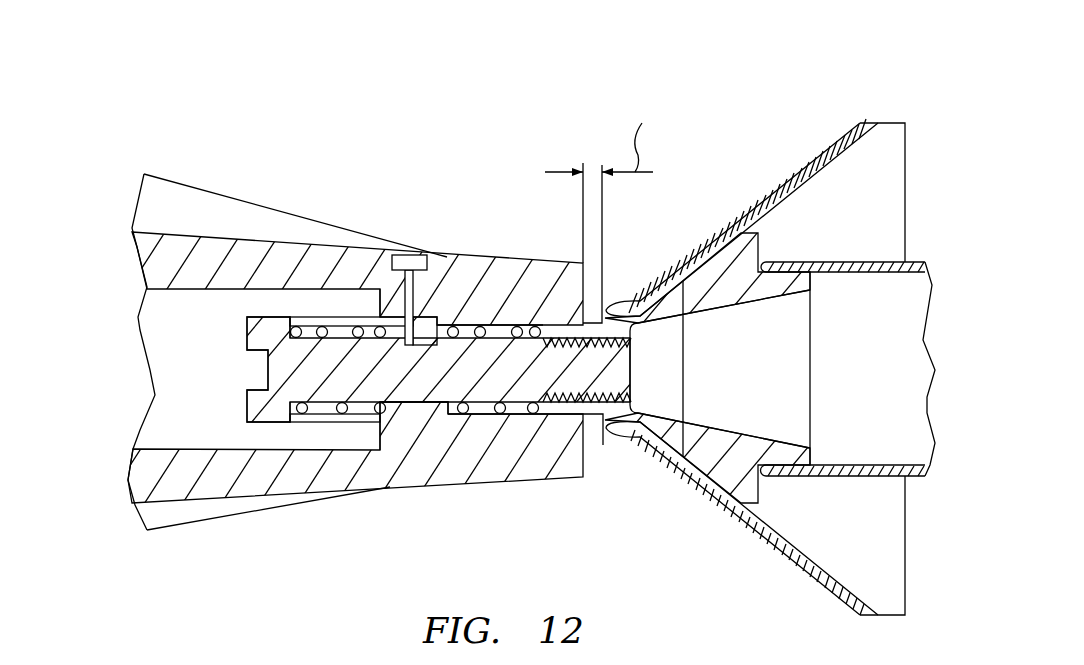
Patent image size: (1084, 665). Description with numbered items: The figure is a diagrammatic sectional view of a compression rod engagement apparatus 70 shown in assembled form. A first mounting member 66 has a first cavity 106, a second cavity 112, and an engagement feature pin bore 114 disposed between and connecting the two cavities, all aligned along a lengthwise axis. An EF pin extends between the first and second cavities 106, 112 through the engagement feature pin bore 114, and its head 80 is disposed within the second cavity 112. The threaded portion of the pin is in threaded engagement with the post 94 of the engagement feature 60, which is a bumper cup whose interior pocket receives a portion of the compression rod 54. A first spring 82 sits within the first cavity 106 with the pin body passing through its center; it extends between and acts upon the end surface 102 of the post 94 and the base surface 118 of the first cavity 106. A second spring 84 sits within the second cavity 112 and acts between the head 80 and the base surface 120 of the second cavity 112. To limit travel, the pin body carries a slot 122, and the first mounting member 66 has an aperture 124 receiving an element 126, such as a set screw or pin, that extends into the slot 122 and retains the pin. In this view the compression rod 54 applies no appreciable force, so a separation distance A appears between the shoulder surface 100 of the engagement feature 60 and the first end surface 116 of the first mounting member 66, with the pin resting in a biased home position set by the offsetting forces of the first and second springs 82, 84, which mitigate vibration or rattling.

The compression rod engagement apparatus 70 is at (793, 74).
The first mounting member 66 is at (112, 238).
The second cavity 112 is at (157, 420).
The head 80 is at (260, 327).
The first spring 82 is at (517, 403).
The second spring 84 is at (340, 413).
The first cavity 106 is at (503, 333).
The slot 122 is at (432, 327).
The element 126 is at (415, 303).
The aperture 124 is at (403, 294).
The base surface 120 is at (380, 308).
The engagement feature pin bore 114 is at (443, 387).
The base surface 118 is at (430, 405).
The end surface 102 is at (548, 413).
The first end surface 116 is at (593, 447).
The shoulder surface 100 is at (593, 452).
The post 94 is at (613, 283).
The compression rod 54 is at (891, 255).
The engagement feature 60 is at (930, 556).